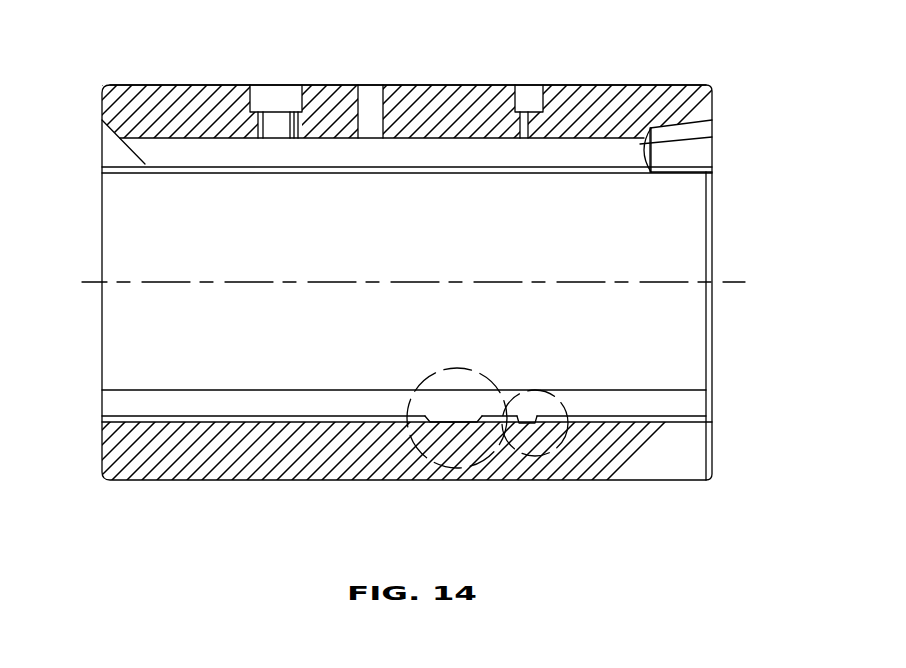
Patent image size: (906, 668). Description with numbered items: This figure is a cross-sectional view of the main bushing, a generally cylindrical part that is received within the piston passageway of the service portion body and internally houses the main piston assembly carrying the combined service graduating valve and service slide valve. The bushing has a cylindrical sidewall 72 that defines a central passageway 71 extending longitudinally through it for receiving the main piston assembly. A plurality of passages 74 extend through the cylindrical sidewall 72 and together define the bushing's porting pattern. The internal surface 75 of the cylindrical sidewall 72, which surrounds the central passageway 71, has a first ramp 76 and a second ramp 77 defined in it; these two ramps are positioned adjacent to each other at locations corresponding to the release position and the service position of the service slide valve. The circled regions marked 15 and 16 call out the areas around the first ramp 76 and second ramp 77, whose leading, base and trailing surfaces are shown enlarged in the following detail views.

The central passageway 71 is at (112, 247).
The cylindrical sidewall 72 is at (617, 86).
The passages 74 is at (276, 115).
The internal surface 75 is at (683, 418).
The first ramp 76 is at (455, 420).
The second ramp 77 is at (525, 418).
The first detail region 15 is at (426, 463).
The second detail region 16 is at (558, 450).